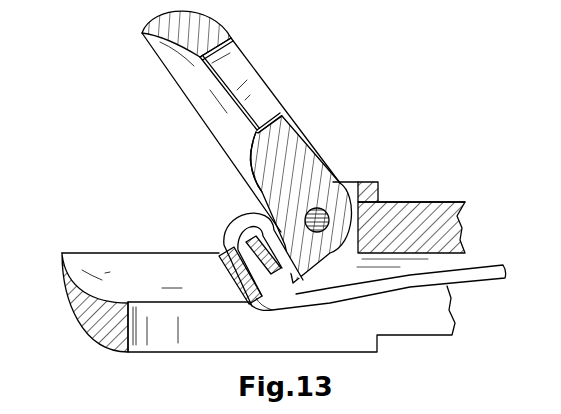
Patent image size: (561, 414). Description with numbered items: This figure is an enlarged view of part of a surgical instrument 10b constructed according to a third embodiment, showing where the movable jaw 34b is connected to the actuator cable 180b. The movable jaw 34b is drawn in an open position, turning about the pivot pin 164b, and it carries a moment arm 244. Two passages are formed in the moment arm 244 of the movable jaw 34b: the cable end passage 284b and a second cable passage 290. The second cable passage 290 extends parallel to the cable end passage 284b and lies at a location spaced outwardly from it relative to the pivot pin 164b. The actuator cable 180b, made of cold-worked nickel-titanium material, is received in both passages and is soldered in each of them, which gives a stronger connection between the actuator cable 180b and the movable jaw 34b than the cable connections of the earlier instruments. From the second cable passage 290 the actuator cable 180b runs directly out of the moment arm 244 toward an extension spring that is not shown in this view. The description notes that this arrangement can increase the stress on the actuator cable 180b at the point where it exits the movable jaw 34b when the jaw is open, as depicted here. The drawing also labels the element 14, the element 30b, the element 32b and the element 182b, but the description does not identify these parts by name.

The surgical instrument 10b is at (122, 164).
The handle arm 30b is at (137, 97).
The blade 32b is at (270, 74).
The pivot pin 164b is at (268, 245).
The body 14 is at (328, 238).
The movable jaw 34b is at (70, 324).
The cable end passage 284b is at (278, 224).
The second cable passage 290 is at (228, 250).
The moment arm 244 is at (293, 292).
The actuator cable 180b is at (472, 290).
The strip lower portion 182b is at (410, 292).